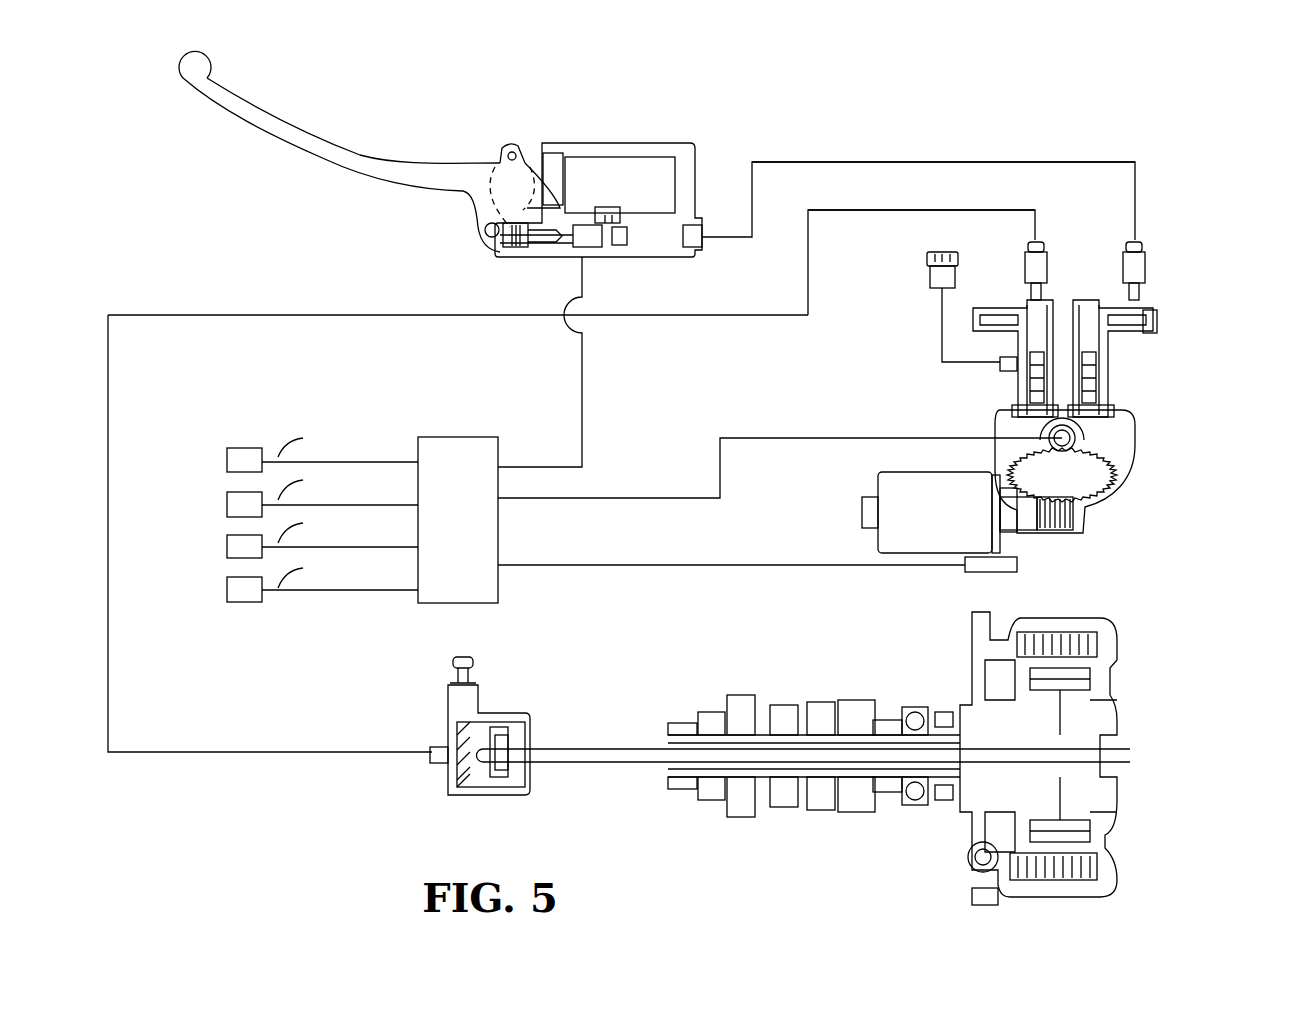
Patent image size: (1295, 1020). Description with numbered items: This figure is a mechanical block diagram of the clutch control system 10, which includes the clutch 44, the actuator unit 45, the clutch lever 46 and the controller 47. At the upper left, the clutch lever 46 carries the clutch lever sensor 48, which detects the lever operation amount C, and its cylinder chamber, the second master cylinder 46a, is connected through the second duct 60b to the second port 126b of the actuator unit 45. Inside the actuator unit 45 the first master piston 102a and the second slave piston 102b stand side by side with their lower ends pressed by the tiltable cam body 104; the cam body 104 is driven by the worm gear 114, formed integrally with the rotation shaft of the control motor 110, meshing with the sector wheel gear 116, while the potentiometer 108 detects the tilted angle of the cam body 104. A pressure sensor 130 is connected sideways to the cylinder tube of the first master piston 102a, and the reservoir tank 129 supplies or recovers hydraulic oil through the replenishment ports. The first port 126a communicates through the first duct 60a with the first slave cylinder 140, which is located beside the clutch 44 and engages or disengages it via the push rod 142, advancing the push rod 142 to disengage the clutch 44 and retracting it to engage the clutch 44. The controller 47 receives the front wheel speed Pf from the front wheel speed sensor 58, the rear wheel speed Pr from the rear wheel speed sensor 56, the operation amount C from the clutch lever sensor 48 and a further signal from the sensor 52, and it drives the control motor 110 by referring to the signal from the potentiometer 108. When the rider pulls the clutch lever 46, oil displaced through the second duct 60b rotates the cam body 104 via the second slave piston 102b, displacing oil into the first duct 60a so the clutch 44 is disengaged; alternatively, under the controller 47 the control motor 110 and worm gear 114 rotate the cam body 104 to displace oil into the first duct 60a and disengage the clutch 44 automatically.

The clutch control system 10 is at (1117, 95).
The clutch 44 is at (1108, 657).
The actuator unit 45 is at (1034, 436).
The clutch lever 46 is at (285, 138).
The cylinder chamber (second master cylinder) 46a is at (658, 250).
The controller 47 is at (428, 436).
The clutch lever sensor 48 is at (520, 150).
The throttle opening sensor 52 is at (225, 586).
The rear wheel speed sensor 56 is at (225, 502).
The front wheel speed sensor 58 is at (225, 458).
The first duct 60a is at (1005, 208).
The second duct 60b is at (1102, 160).
The first master piston 102a is at (1020, 382).
The second slave piston 102b is at (1113, 378).
The cam body 104 is at (1100, 445).
The potentiometer 108 is at (1083, 427).
The control motor 110 is at (890, 483).
The worm gear 114 is at (1087, 517).
The sector wheel gear 116 is at (1103, 480).
The first port 126a is at (1027, 303).
The second port 126b is at (1113, 307).
The reservoir tank 129 is at (933, 278).
The pressure sensor 130 is at (1007, 320).
The first slave cylinder 140 is at (512, 717).
The push rod 142 is at (593, 749).